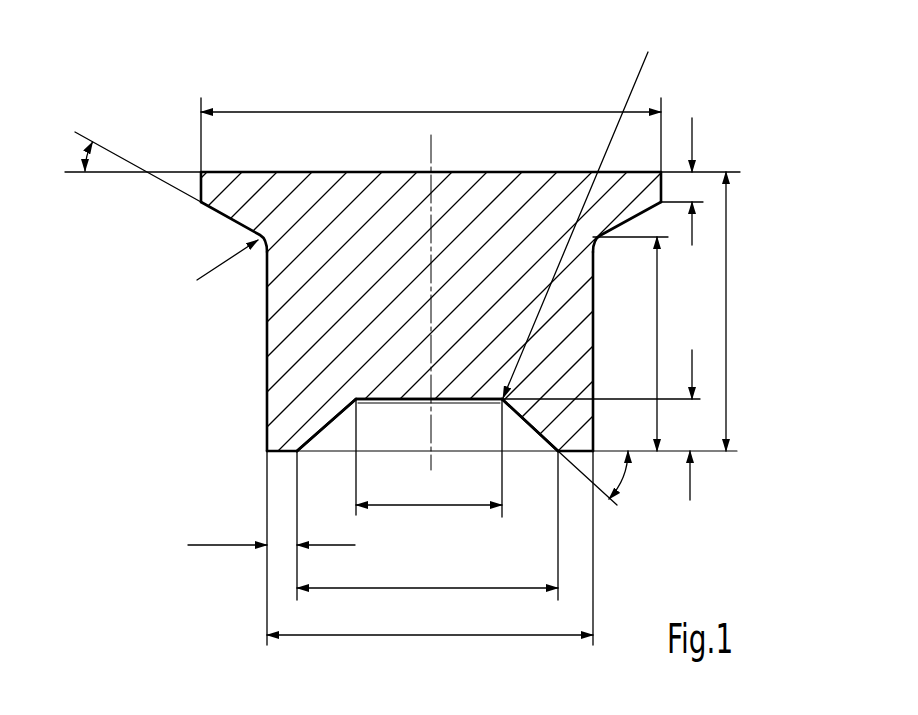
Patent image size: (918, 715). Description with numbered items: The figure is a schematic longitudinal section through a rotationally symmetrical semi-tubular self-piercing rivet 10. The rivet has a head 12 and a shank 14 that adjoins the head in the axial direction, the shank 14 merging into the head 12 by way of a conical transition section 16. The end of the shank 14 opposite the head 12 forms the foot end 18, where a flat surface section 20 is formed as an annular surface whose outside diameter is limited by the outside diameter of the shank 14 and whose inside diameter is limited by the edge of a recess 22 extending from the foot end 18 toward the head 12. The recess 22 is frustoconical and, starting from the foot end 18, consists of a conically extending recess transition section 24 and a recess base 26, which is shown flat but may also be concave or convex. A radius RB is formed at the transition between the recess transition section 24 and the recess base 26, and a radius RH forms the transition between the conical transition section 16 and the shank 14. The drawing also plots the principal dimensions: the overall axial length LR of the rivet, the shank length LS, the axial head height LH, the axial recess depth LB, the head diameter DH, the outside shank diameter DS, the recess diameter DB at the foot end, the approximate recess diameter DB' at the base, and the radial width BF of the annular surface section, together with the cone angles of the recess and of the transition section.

The self-piercing rivet 10 is at (697, 98).
The head 12 is at (222, 186).
The shank 14 is at (283, 325).
The transition section 16 is at (233, 228).
The foot end 18 is at (322, 455).
The flat surface section 20 is at (290, 462).
The recess 22 is at (378, 428).
The recess transition section 24 is at (519, 428).
The recess base 26 is at (463, 400).
The head diameter DH is at (445, 110).
The radius at recess transition RB is at (630, 95).
The axial height of head LH is at (692, 143).
The shank length LS is at (657, 323).
The axial length of self-piercing rivet LR is at (728, 338).
The axial depth of recess LB is at (693, 477).
The radius between transition section and shank RH is at (211, 266).
The recess diameter at the base DB' is at (399, 532).
The recess diameter at the foot end DB is at (427, 604).
The radial width of annular surface section BF is at (232, 548).
The outside diameter of shank DS is at (425, 640).